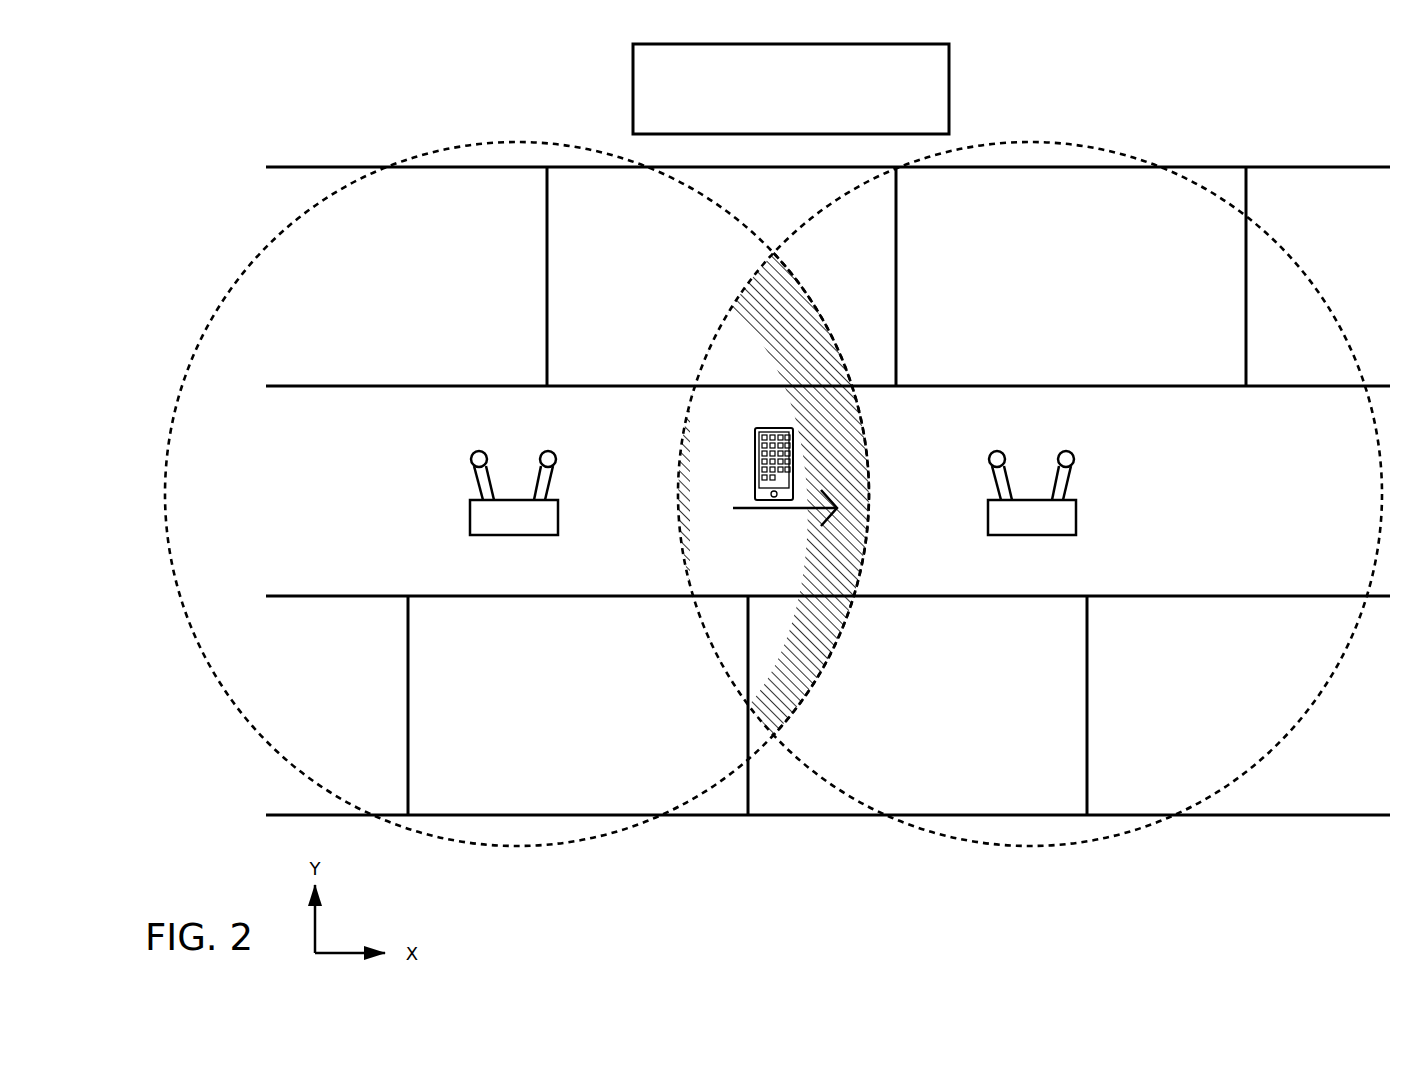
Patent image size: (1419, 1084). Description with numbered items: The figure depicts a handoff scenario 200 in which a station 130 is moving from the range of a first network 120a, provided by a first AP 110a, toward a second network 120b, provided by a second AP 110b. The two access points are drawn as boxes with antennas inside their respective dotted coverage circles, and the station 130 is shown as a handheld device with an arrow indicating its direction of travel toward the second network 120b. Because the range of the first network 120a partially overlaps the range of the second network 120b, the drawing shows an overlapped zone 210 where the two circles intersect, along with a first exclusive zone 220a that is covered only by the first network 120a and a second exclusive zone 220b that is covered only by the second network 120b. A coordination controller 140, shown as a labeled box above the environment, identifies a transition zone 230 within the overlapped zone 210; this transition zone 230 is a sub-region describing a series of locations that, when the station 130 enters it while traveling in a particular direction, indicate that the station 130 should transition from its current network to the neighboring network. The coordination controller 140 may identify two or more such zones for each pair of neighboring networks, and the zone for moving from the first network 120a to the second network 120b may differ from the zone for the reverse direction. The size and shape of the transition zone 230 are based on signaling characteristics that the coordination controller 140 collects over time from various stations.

The handoff scenario 200 is at (280, 147).
The coordination controller 140 is at (810, 112).
The first network 120a is at (492, 142).
The second network 120b is at (1037, 140).
The first AP 110a is at (470, 523).
The second AP 110b is at (1077, 515).
The station 130 is at (755, 460).
The overlapped zone 210 is at (765, 622).
The transition zone 230 is at (817, 622).
The first exclusive zone 220a is at (565, 762).
The second exclusive zone 220b is at (1020, 782).